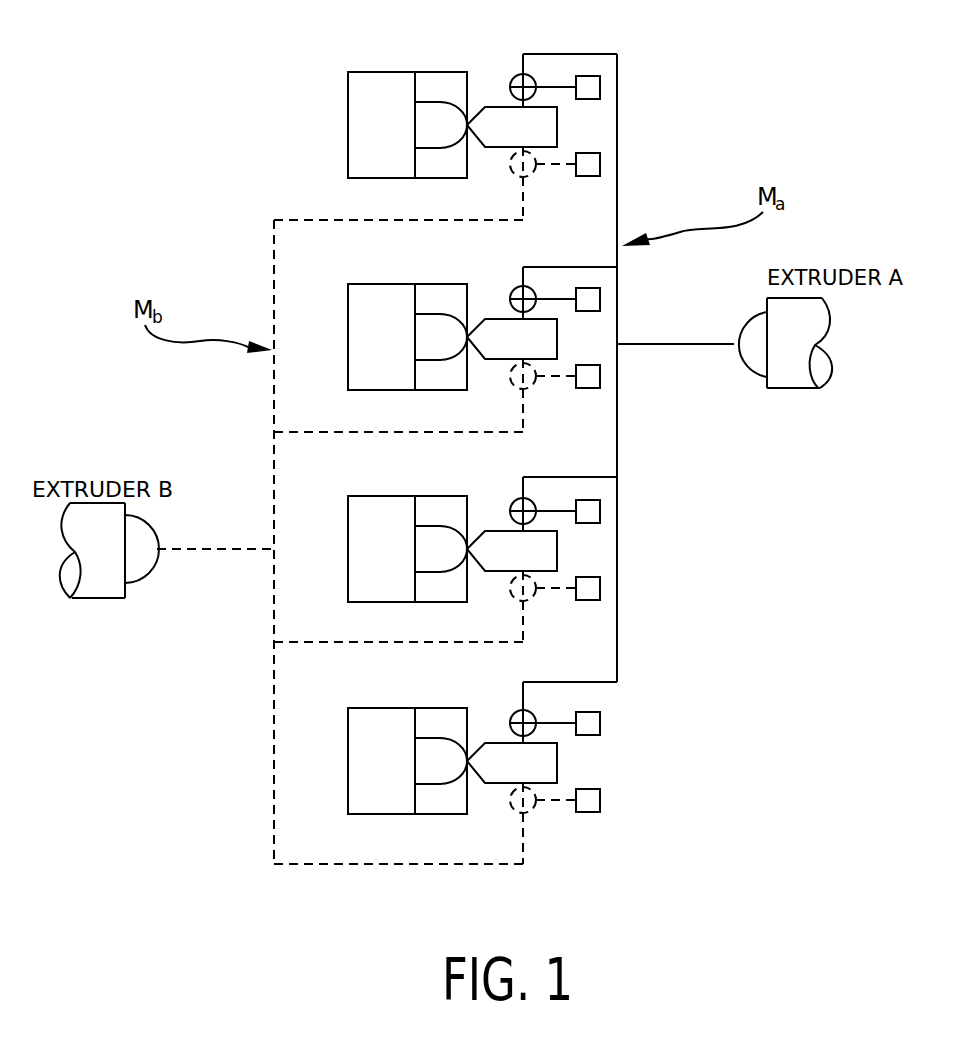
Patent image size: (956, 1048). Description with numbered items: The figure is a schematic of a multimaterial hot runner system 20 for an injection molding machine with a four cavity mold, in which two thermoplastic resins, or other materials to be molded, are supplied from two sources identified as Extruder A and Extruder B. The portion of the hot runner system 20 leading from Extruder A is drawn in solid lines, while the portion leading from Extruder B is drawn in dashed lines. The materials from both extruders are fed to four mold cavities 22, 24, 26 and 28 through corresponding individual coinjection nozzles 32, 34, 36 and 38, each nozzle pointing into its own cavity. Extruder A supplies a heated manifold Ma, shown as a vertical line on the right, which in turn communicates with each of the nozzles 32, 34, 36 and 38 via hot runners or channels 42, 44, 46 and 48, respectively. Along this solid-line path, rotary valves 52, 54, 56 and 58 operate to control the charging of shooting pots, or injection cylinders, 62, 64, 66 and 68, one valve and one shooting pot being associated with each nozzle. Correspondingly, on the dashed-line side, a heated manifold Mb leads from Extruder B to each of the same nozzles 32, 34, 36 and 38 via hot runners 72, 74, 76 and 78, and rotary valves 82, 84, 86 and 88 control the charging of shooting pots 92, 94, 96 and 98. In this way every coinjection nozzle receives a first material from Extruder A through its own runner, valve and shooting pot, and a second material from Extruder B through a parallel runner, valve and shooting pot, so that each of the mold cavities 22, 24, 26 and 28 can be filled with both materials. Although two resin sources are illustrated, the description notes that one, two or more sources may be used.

The hot runner system 20 is at (140, 395).
The mold cavity 22 is at (348, 122).
The mold cavity 24 is at (348, 334).
The mold cavity 26 is at (348, 546).
The mold cavity 28 is at (348, 758).
The coinjection nozzle 32 is at (497, 107).
The coinjection nozzle 34 is at (497, 319).
The coinjection nozzle 36 is at (497, 531).
The coinjection nozzle 38 is at (497, 743).
The hot runner 42 is at (583, 54).
The hot runner 44 is at (583, 267).
The hot runner 46 is at (583, 477).
The hot runner 48 is at (578, 682).
The rotary valve 52 is at (518, 78).
The rotary valve 54 is at (518, 290).
The rotary valve 56 is at (518, 502).
The rotary valve 58 is at (518, 714).
The shooting pot 62 is at (590, 88).
The shooting pot 64 is at (590, 300).
The shooting pot 66 is at (590, 512).
The shooting pot 68 is at (590, 724).
The hot runner 72 is at (310, 220).
The hot runner 74 is at (310, 432).
The hot runner 76 is at (310, 642).
The hot runner 78 is at (310, 864).
The rotary valve 82 is at (532, 173).
The rotary valve 84 is at (532, 385).
The rotary valve 86 is at (532, 597).
The rotary valve 88 is at (532, 809).
The shooting pot 92 is at (602, 163).
The shooting pot 94 is at (602, 375).
The shooting pot 96 is at (602, 587).
The shooting pot 98 is at (602, 799).